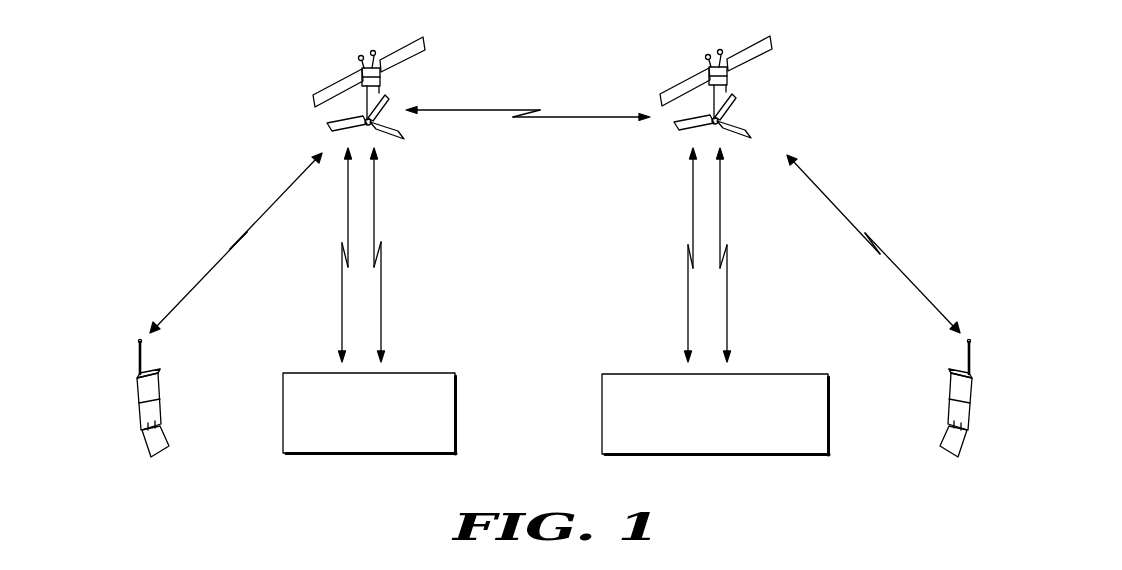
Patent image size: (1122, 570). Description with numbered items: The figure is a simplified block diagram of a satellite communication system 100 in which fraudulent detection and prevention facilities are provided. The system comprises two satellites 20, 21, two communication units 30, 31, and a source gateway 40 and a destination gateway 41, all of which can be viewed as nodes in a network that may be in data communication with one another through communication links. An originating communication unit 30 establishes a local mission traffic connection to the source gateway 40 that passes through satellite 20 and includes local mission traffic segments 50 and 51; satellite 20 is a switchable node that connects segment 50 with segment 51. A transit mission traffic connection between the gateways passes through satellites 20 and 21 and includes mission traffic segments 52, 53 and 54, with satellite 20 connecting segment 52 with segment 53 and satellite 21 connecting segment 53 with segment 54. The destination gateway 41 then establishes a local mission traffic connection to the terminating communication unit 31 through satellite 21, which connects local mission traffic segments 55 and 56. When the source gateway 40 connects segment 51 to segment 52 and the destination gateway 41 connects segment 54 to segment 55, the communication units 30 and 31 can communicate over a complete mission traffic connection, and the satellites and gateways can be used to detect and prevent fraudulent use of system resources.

The satellite 20 is at (408, 53).
The satellite 21 is at (755, 55).
The communication unit 30 is at (161, 384).
The communication unit 31 is at (948, 390).
The source gateway 40 is at (457, 400).
The destination gateway 41 is at (602, 430).
The local mission traffic segment 50 is at (272, 210).
The local mission traffic segment 51 is at (342, 302).
The mission traffic segment 52 is at (377, 208).
The mission traffic segment 53 is at (590, 116).
The mission traffic segment 54 is at (692, 212).
The local mission traffic segment 55 is at (727, 300).
The local mission traffic segment 56 is at (838, 212).
The satellite communication system 100 is at (747, 536).